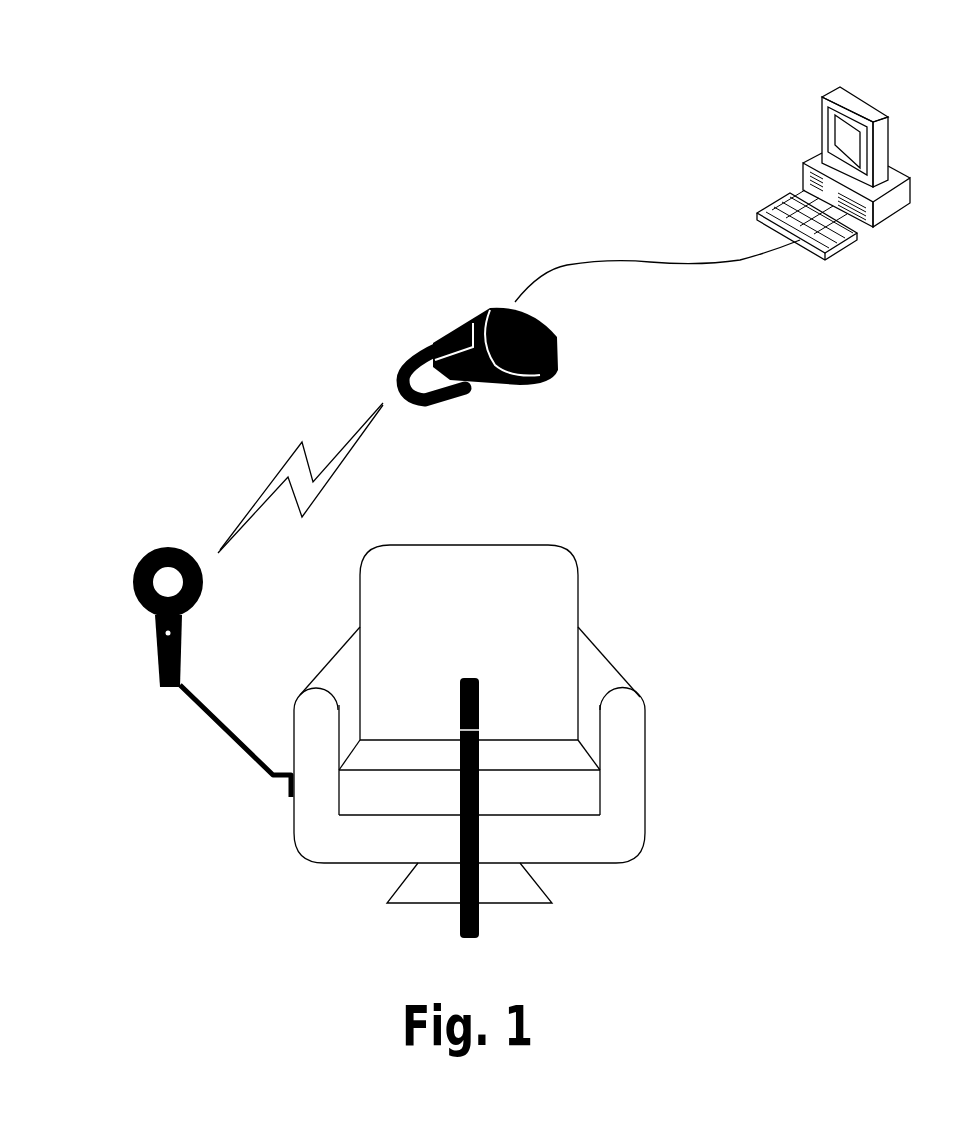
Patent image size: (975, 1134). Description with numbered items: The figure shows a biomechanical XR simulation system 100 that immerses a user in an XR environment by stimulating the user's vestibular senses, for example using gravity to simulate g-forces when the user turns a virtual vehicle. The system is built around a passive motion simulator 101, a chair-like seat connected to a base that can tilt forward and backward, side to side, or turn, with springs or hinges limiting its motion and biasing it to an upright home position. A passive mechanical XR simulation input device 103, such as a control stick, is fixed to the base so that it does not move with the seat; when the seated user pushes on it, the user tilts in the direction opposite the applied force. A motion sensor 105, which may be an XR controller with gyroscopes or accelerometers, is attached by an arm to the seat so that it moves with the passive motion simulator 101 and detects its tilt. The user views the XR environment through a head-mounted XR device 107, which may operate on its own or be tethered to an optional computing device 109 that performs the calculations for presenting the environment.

The biomechanical XR simulation system 100 is at (218, 128).
The passive motion simulator 101 is at (563, 545).
The passive mechanical XR simulation input device 103 is at (473, 943).
The motion sensor 105 is at (132, 568).
The XR device 107 is at (530, 390).
The computing device 109 is at (811, 141).